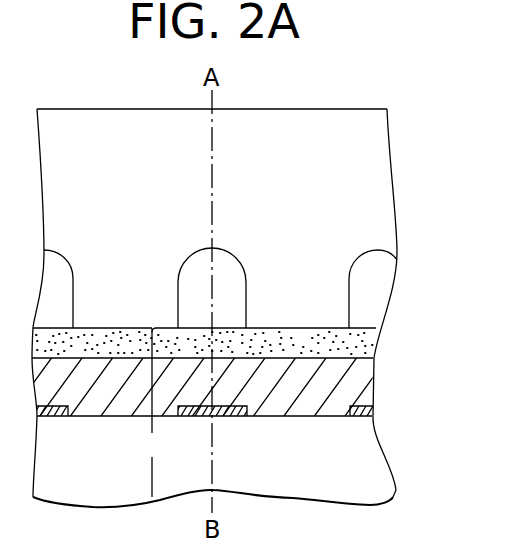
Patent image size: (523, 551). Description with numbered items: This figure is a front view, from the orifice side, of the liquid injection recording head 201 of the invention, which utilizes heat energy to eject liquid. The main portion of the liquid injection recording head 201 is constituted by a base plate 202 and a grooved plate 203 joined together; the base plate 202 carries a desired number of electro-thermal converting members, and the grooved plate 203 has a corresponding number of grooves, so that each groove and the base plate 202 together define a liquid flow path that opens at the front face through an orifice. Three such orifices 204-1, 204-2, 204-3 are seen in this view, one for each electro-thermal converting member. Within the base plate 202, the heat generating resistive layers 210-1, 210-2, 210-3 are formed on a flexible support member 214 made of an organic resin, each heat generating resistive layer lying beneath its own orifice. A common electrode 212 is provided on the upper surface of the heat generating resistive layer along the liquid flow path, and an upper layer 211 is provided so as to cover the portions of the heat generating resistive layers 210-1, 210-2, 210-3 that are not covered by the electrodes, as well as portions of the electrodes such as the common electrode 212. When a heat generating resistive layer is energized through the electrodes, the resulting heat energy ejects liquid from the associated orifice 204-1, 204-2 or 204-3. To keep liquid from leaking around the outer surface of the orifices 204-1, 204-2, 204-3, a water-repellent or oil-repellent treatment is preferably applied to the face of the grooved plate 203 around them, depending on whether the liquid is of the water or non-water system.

The liquid injection recording head 201 is at (357, 107).
The base plate 202 is at (152, 433).
The grooved plate 203 is at (365, 145).
The orifice 204-1 is at (55, 280).
The orifice 204-2 is at (223, 270).
The orifice 204-3 is at (367, 287).
The heat generating resistive layer 210-1 is at (55, 418).
The heat generating resistive layer 210-2 is at (230, 418).
The heat generating resistive layer 210-3 is at (363, 420).
The upper layer 211 is at (355, 347).
The common electrode 212 is at (350, 392).
The flexible support member 214 is at (375, 477).